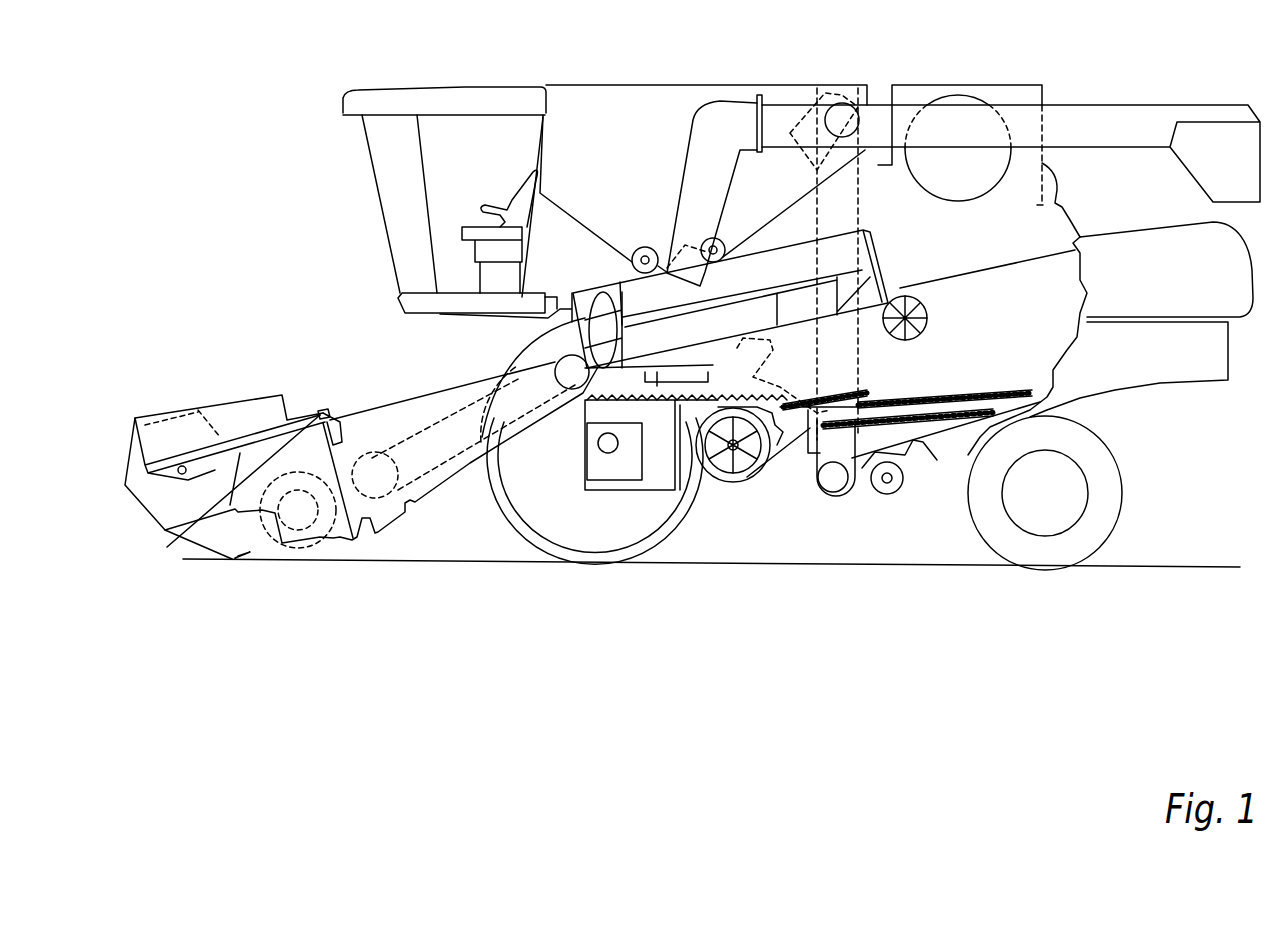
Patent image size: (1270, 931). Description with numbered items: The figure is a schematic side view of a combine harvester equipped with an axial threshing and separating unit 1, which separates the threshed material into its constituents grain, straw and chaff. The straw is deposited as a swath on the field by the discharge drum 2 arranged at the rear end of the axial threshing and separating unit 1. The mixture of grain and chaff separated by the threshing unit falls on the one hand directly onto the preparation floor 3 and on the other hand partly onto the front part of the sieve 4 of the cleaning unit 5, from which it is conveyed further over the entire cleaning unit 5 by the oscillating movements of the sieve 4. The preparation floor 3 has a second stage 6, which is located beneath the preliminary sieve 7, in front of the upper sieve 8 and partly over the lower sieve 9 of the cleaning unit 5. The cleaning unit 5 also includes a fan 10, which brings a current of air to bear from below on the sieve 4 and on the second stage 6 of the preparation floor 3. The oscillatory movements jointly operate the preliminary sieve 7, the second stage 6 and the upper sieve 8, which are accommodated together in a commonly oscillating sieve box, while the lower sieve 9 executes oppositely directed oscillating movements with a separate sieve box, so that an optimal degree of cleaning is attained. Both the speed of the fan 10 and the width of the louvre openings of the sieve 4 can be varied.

The axial threshing and separating unit 1 is at (727, 272).
The discharge drum 2 is at (920, 330).
The preparation floor 3 is at (640, 400).
The sieve 4 is at (935, 457).
The cleaning unit 5 is at (937, 459).
The second stage 6 is at (806, 415).
The preliminary sieve 7 is at (790, 410).
The upper sieve 8 is at (922, 407).
The lower sieve 9 is at (863, 395).
The fan 10 is at (735, 447).